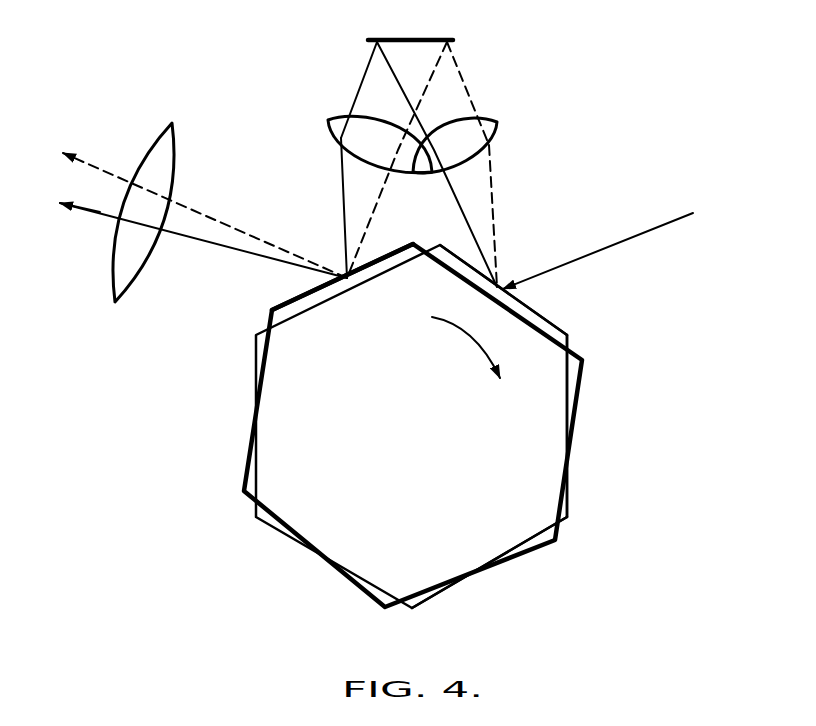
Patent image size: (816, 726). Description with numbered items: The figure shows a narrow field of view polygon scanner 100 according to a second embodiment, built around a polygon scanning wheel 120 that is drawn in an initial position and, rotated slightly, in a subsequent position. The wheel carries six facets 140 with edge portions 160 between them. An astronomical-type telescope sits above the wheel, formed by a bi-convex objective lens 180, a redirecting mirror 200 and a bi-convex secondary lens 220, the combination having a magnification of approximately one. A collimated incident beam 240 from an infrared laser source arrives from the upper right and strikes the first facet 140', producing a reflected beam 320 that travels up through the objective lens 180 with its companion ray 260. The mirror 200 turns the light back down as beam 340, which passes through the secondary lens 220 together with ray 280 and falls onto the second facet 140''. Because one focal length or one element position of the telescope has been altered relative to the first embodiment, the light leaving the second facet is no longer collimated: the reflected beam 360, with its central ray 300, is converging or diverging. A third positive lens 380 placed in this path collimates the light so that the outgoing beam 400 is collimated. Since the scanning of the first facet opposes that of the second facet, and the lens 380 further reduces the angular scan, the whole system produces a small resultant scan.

The narrow field of view polygon scanner 100 is at (605, 138).
The polygon scanning wheel 120 is at (585, 451).
The facets 140 is at (612, 426).
The first facet 140' is at (535, 290).
The second facet 140'' is at (297, 277).
The edge portions 160 is at (568, 512).
The bi-convex objective lens 180 is at (478, 115).
The redirecting mirror 200 is at (410, 38).
The bi-convex secondary lens 220 is at (340, 118).
The incident beam 240 is at (632, 236).
The input ray 260 is at (499, 262).
The telescope beam ray 280 is at (340, 165).
The central ray 300 is at (262, 200).
The reflected beam 320 is at (463, 222).
The redirected beam 340 is at (356, 83).
The reflected beam 360 is at (173, 233).
The third positive lens 380 is at (150, 148).
The outgoing beam 400 is at (100, 218).